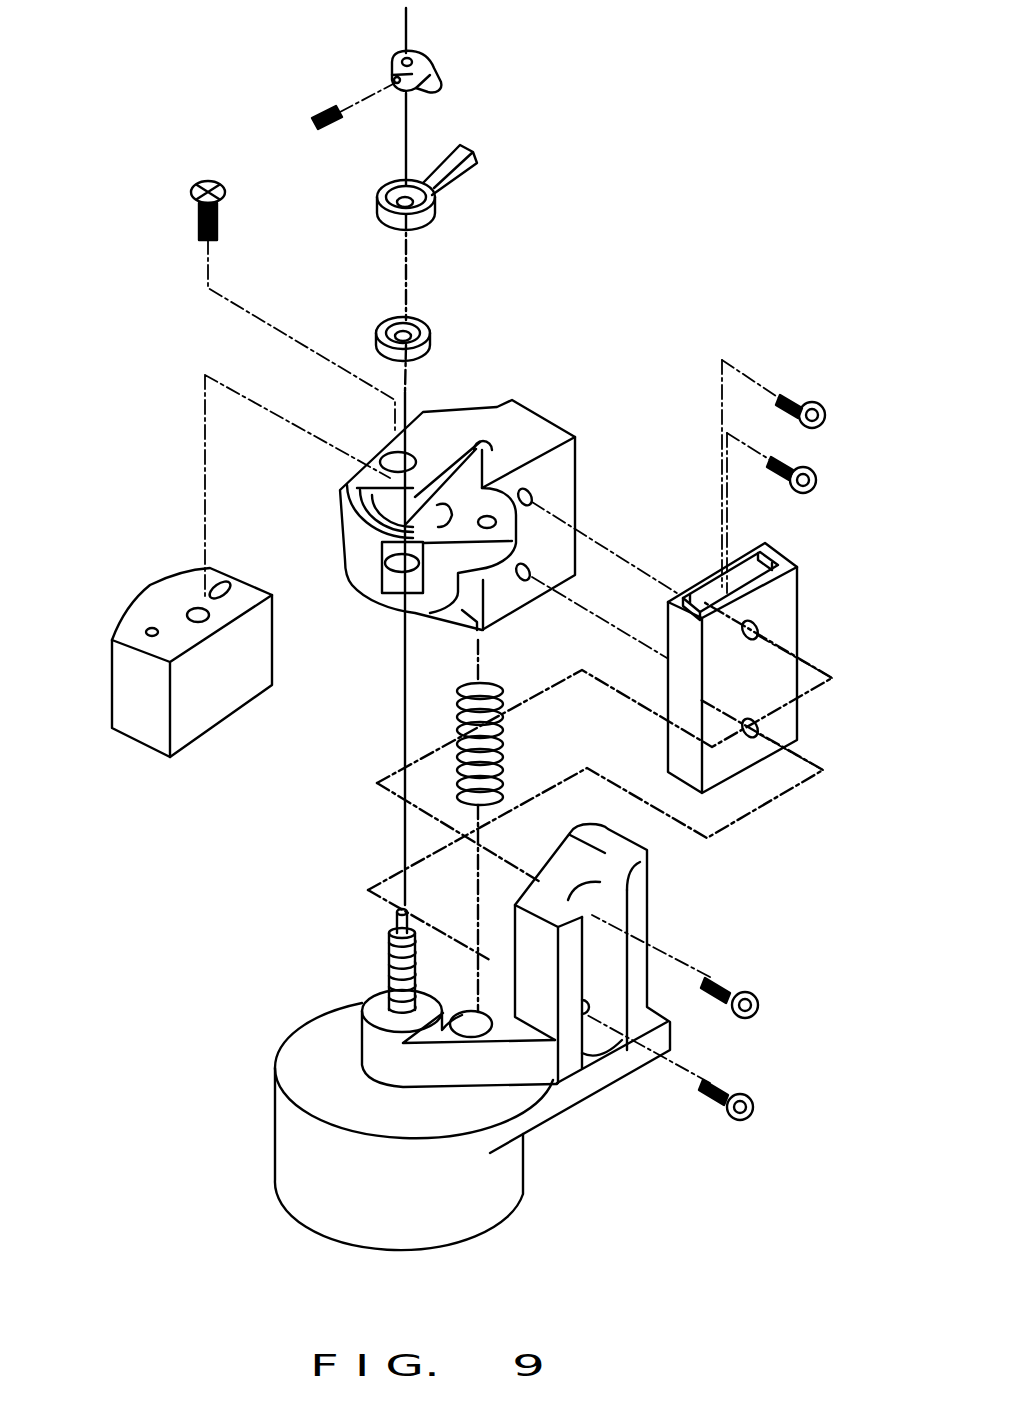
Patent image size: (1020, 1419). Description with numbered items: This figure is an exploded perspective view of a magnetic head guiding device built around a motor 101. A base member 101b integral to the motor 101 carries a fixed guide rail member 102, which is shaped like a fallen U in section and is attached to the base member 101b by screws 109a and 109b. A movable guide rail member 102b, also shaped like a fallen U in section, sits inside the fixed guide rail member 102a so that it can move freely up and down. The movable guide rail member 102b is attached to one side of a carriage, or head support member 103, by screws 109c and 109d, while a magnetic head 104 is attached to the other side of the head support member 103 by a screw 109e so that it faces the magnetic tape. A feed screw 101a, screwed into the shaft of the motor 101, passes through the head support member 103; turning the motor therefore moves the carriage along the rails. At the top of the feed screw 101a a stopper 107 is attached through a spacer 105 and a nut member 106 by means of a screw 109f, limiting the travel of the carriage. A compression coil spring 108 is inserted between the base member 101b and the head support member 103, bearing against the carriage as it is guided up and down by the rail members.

The motor 101 is at (502, 1222).
The feed screw 101a is at (386, 962).
The base member 101b is at (613, 1076).
The fixed guide rail member 102 is at (800, 548).
The fixed guide rail member 102a is at (800, 597).
The movable guide rail member 102b is at (750, 545).
The head support member 103 is at (513, 398).
The magnetic head 104 is at (218, 723).
The spacer 105 is at (425, 313).
The nut member 106 is at (480, 155).
The stopper 107 is at (430, 61).
The compression coil spring 108 is at (458, 712).
The screw 109a is at (727, 985).
The screw 109b is at (723, 1085).
The screw 109c is at (808, 395).
The screw 109d is at (797, 461).
The screw 109e is at (222, 213).
The screw 109f is at (318, 108).